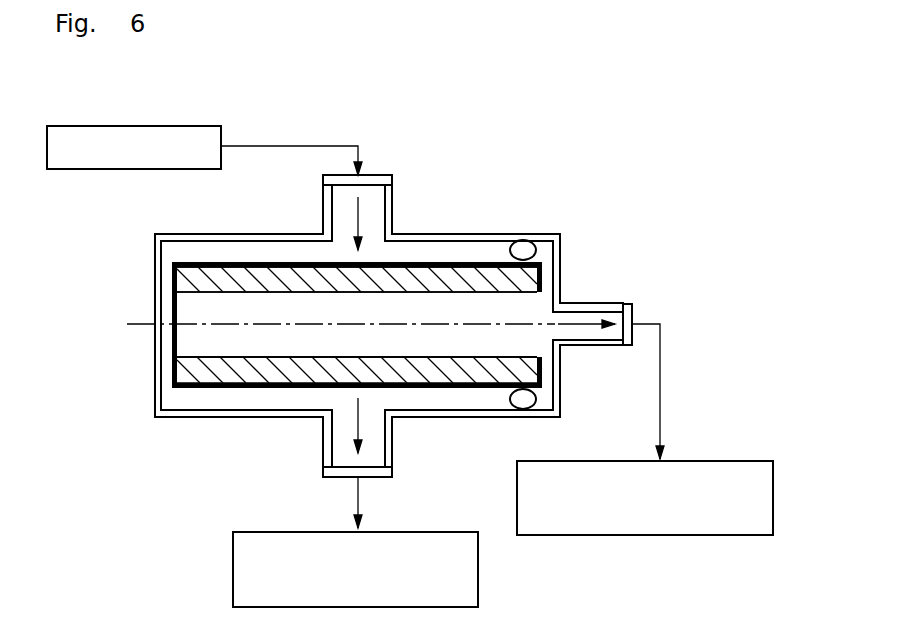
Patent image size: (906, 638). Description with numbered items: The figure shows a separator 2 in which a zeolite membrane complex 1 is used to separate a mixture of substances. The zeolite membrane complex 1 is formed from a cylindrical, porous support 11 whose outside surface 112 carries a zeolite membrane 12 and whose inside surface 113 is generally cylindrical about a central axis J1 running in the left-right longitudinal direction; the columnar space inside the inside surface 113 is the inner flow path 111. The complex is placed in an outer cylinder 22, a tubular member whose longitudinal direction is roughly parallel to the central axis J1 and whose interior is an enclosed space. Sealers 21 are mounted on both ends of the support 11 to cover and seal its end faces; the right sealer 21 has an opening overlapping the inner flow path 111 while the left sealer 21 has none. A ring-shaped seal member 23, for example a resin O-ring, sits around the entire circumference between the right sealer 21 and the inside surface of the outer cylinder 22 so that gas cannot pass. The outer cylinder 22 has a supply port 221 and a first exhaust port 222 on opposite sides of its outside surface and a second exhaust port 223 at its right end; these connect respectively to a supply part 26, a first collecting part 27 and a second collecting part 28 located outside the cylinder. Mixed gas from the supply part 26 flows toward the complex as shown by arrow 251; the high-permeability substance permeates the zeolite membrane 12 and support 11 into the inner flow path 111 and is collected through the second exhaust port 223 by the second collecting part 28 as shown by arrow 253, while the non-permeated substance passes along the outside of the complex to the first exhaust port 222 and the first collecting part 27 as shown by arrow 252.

The zeolite membrane complex 1 is at (470, 160).
The support 11 is at (446, 273).
The zeolite membrane 12 is at (482, 265).
The inner flow path 111 is at (262, 340).
The outside surface 112 is at (412, 262).
The inside surface 113 is at (432, 357).
The separator 2 is at (71, 88).
The sealer 21 is at (172, 305).
The outer cylinder 22 is at (157, 265).
The supply port 221 is at (333, 222).
The first exhaust port 222 is at (382, 456).
The second exhaust port 223 is at (611, 312).
The seal member 23 is at (524, 246).
The arrow 251 is at (355, 208).
The arrow 252 is at (355, 427).
The arrow 253 is at (587, 328).
The supply part 26 is at (163, 124).
The first collecting part 27 is at (480, 555).
The second collecting part 28 is at (660, 536).
The central axis J1 is at (137, 326).